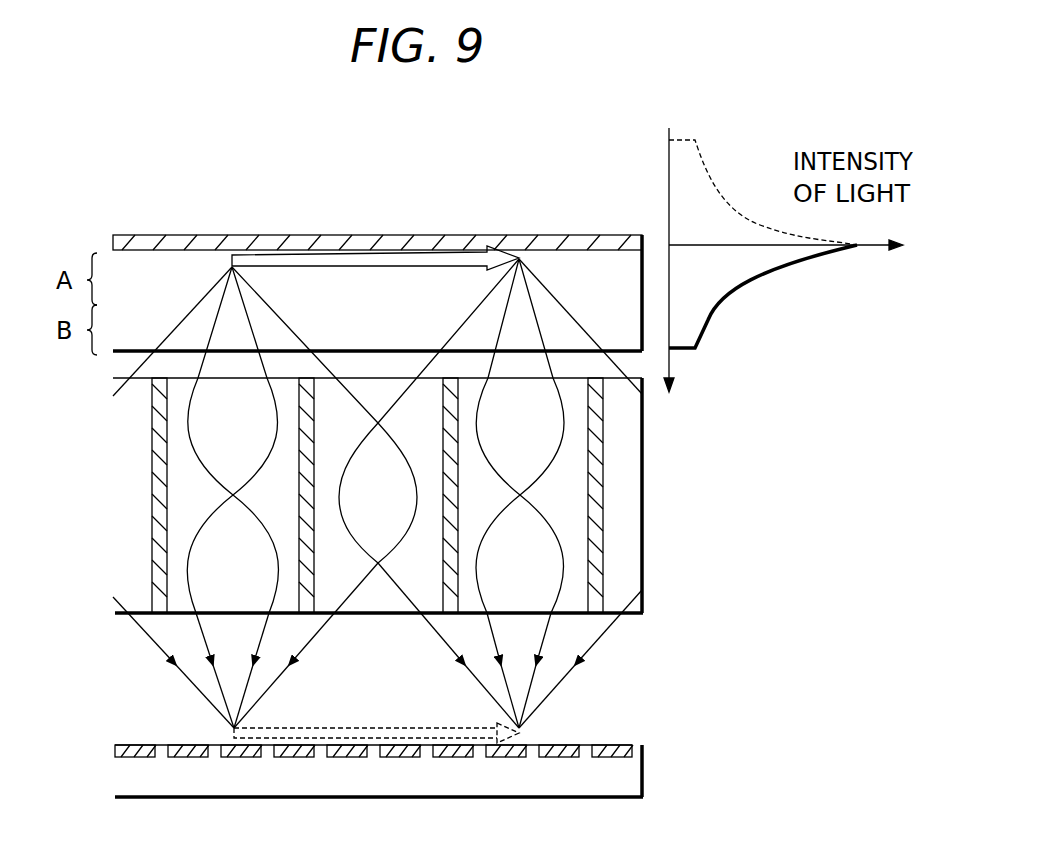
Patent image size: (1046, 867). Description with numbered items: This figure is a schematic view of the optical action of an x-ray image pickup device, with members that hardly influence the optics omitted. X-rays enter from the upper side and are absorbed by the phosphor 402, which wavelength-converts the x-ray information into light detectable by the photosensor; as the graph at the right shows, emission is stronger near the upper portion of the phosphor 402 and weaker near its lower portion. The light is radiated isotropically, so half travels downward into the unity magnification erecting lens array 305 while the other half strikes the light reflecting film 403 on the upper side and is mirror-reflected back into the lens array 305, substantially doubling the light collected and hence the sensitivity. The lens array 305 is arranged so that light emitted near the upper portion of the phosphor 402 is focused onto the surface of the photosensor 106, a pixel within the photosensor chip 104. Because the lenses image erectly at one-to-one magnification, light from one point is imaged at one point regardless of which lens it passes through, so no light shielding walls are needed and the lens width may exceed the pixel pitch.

The light reflecting film 403 is at (147, 242).
The phosphor 402 is at (207, 265).
The unity magnification erecting lens array 305 is at (645, 487).
The photosensor chip 104 is at (628, 773).
The photosensor 106 is at (130, 755).